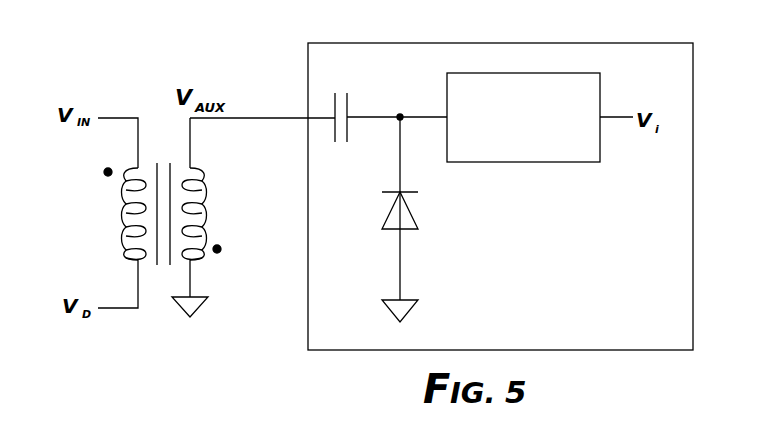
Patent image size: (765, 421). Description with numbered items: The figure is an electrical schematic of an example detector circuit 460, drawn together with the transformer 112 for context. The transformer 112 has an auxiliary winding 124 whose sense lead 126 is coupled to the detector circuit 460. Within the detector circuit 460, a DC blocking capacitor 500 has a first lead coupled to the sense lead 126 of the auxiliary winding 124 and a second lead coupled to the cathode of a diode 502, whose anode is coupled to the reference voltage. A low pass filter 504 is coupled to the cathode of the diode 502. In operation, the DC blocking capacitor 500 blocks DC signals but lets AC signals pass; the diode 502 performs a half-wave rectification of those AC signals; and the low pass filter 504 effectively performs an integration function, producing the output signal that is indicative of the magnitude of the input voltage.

The transformer 112 is at (187, 251).
The auxiliary winding 124 is at (214, 207).
The sense lead 126 is at (188, 125).
The detector circuit 460 is at (308, 67).
The DC blocking capacitor 500 is at (355, 109).
The diode 502 is at (415, 218).
The low pass filter 504 is at (543, 162).